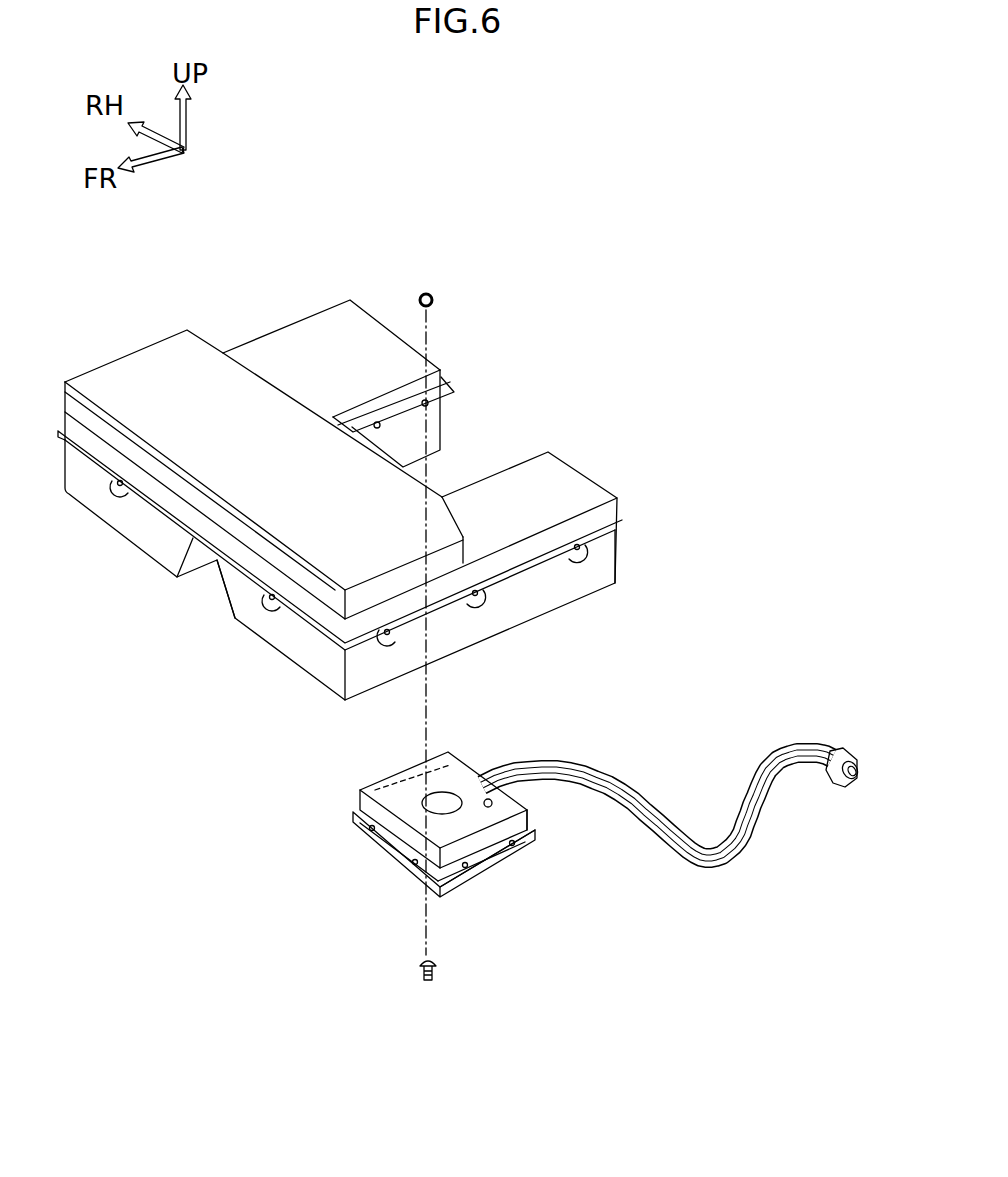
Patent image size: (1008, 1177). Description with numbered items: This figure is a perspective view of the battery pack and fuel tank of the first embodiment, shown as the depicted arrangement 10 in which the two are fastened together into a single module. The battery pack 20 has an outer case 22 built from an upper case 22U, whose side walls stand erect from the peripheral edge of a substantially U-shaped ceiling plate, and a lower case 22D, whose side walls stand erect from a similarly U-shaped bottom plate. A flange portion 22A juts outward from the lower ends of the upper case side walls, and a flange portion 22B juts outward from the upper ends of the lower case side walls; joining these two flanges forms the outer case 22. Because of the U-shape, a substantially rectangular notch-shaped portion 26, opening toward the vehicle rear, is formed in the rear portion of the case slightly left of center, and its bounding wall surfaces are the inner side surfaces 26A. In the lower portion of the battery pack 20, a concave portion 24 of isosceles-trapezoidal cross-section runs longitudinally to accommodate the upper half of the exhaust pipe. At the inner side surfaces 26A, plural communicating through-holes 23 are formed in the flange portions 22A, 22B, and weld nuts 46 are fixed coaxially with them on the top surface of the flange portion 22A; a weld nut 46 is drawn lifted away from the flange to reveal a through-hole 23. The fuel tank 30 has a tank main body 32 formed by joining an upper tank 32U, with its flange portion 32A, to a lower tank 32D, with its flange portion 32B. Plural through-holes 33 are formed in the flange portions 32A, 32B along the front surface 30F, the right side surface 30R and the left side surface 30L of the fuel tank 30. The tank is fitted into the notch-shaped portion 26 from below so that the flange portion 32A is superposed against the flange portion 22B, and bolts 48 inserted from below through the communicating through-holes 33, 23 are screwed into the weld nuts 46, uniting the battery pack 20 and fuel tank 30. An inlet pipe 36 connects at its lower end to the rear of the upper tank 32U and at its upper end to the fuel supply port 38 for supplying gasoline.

The vehicle battery pack structure 10 is at (652, 444).
The battery pack 20 is at (102, 529).
The outer case 22 is at (267, 349).
The upper case 22U is at (345, 318).
The flange portion 22A is at (620, 524).
The flange portion 22B is at (546, 576).
The lower case 22D is at (523, 633).
The through-holes 23 is at (380, 418).
The concave portion 24 is at (198, 558).
The notch-shaped portion 26 is at (535, 448).
The inner side surfaces 26A is at (437, 430).
The fuel tank 30 is at (380, 855).
The right side surface 30R is at (355, 790).
The front surface 30F is at (405, 833).
The left side surface 30L is at (529, 815).
The tank main body 32 is at (369, 777).
The upper tank 32U is at (457, 778).
The flange portion 32A is at (352, 812).
The flange portion 32B is at (529, 816).
The lower tank 32D is at (458, 875).
The through-holes 33 is at (513, 860).
The inlet pipe 36 is at (745, 853).
The fuel supply port 38 is at (852, 750).
The weld nuts 46 is at (432, 298).
The bolts 48 is at (440, 975).